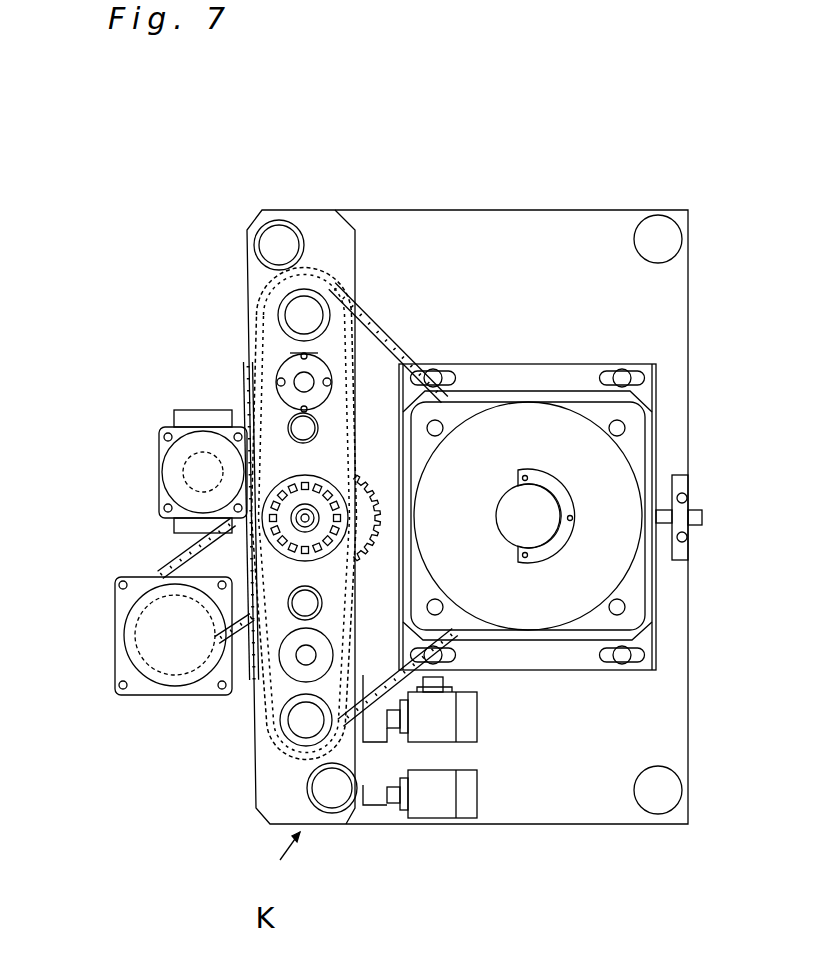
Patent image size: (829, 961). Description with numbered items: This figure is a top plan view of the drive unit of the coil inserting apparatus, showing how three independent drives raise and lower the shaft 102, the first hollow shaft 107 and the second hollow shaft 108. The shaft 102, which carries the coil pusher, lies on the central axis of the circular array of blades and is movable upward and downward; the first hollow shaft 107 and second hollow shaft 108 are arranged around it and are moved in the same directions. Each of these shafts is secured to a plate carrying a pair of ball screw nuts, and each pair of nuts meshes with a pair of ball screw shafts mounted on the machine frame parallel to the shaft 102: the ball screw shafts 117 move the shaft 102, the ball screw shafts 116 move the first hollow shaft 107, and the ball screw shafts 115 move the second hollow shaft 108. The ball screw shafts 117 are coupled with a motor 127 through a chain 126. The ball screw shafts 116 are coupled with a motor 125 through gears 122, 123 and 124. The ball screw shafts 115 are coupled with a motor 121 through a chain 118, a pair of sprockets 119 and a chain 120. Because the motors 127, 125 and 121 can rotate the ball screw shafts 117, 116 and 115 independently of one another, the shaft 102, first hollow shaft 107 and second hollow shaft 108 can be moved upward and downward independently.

The shaft 102 is at (300, 518).
The first hollow shaft 107 is at (345, 498).
The second hollow shaft 108 is at (297, 507).
The ball screw shafts 115 is at (290, 663).
The ball screw shafts 116 is at (303, 515).
The ball screw shafts 117 is at (283, 742).
The chain 118 is at (302, 728).
The sprockets 119 is at (288, 353).
The chain 120 is at (163, 572).
The motor 121 is at (167, 628).
The gear 122 is at (255, 660).
The gear 123 is at (340, 380).
The gear 124 is at (185, 470).
The motor 125 is at (162, 437).
The chain 126 is at (410, 347).
The motor 127 is at (610, 467).